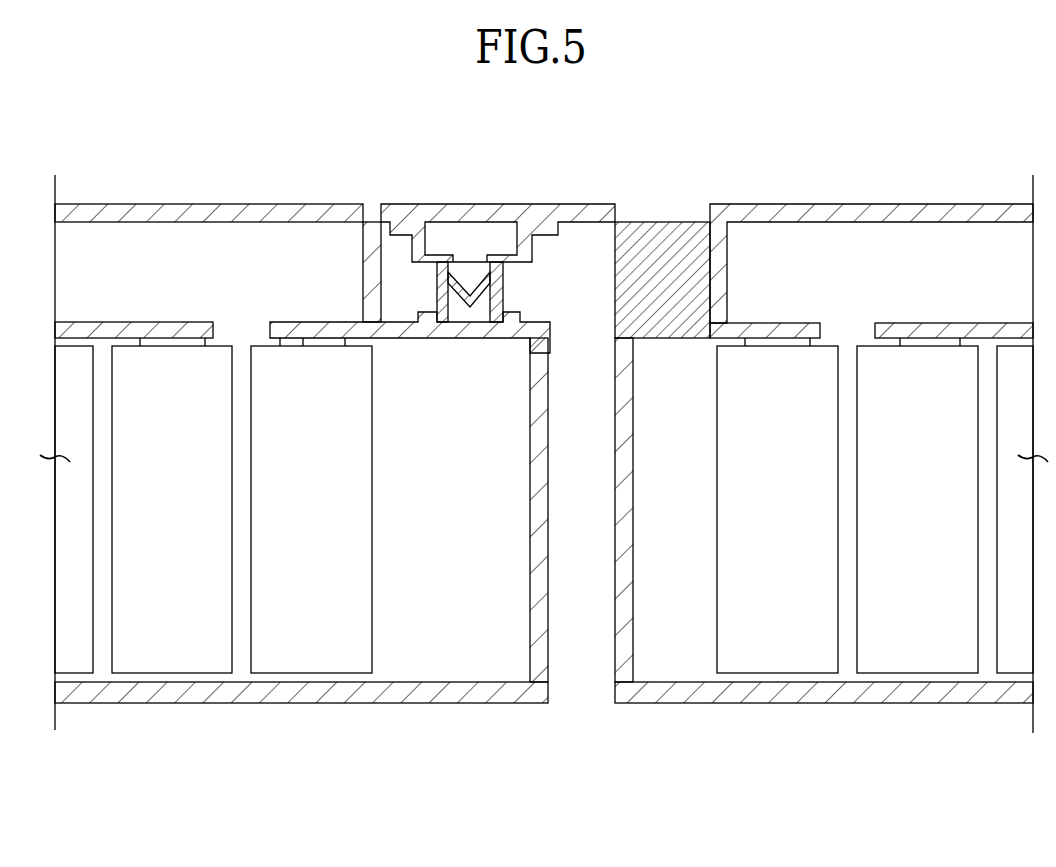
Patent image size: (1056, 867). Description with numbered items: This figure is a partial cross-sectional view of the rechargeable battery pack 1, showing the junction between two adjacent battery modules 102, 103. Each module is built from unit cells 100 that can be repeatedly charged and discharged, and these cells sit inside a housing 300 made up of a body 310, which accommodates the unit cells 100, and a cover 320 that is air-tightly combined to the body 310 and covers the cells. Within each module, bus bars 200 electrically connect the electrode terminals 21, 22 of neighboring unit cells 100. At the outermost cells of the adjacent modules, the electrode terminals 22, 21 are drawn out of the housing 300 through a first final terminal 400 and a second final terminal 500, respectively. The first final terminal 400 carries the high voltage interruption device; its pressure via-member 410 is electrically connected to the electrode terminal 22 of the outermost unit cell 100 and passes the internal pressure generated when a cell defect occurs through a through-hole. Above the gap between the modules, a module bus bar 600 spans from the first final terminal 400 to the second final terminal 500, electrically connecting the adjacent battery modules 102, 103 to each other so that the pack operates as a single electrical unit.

The rechargeable battery pack 1 is at (385, 127).
The electrode terminal 21 is at (777, 340).
The electrode terminal 22 is at (305, 345).
The unit cell 100 is at (312, 676).
The battery module 102 is at (235, 720).
The battery module 103 is at (860, 722).
The bus bar 200 is at (110, 334).
The housing 300 is at (435, 791).
The body 310 is at (147, 692).
The cover 320 is at (188, 211).
The first final terminal 400 is at (513, 290).
The pressure via-member 410 is at (317, 321).
The second final terminal 500 is at (660, 245).
The module bus bar 600 is at (573, 206).